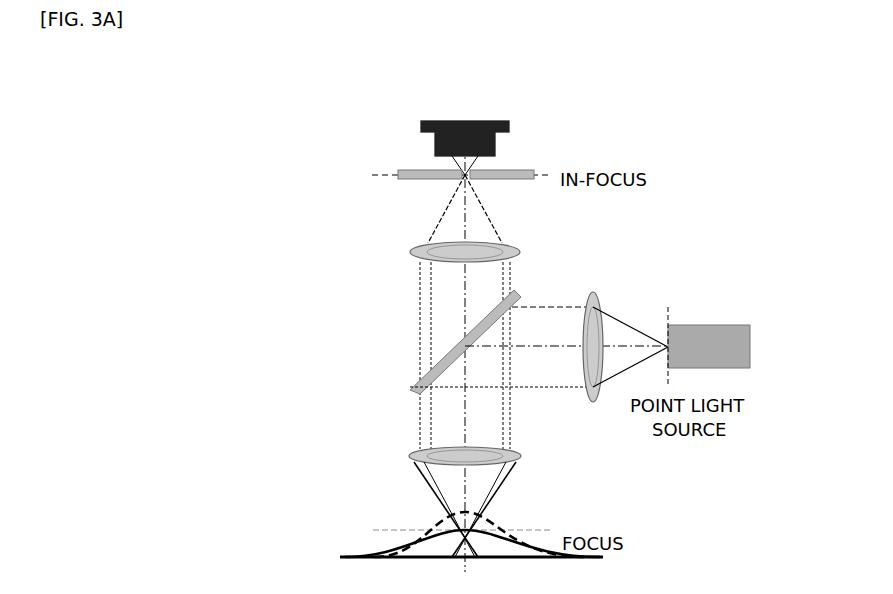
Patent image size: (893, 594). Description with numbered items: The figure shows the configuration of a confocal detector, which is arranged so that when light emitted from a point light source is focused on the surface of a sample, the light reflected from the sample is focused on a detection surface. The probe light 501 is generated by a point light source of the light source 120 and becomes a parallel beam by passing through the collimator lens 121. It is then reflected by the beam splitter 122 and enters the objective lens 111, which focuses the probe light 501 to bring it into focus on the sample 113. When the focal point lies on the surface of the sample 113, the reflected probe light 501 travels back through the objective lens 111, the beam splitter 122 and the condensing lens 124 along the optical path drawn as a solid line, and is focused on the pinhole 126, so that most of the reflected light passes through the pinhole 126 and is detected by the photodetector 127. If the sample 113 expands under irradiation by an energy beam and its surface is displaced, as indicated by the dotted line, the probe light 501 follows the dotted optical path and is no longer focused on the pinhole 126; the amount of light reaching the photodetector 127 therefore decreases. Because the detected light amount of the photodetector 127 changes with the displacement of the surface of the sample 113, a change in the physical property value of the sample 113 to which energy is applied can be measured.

The photodetector 127 is at (461, 124).
The pinhole 126 is at (431, 167).
The condensing lens 124 is at (438, 256).
The beam splitter 122 is at (444, 342).
The probe light 501 is at (539, 349).
The collimator lens 121 is at (625, 332).
The light source 120 is at (711, 340).
The objective lens 111 is at (428, 460).
The sample 113 is at (446, 539).